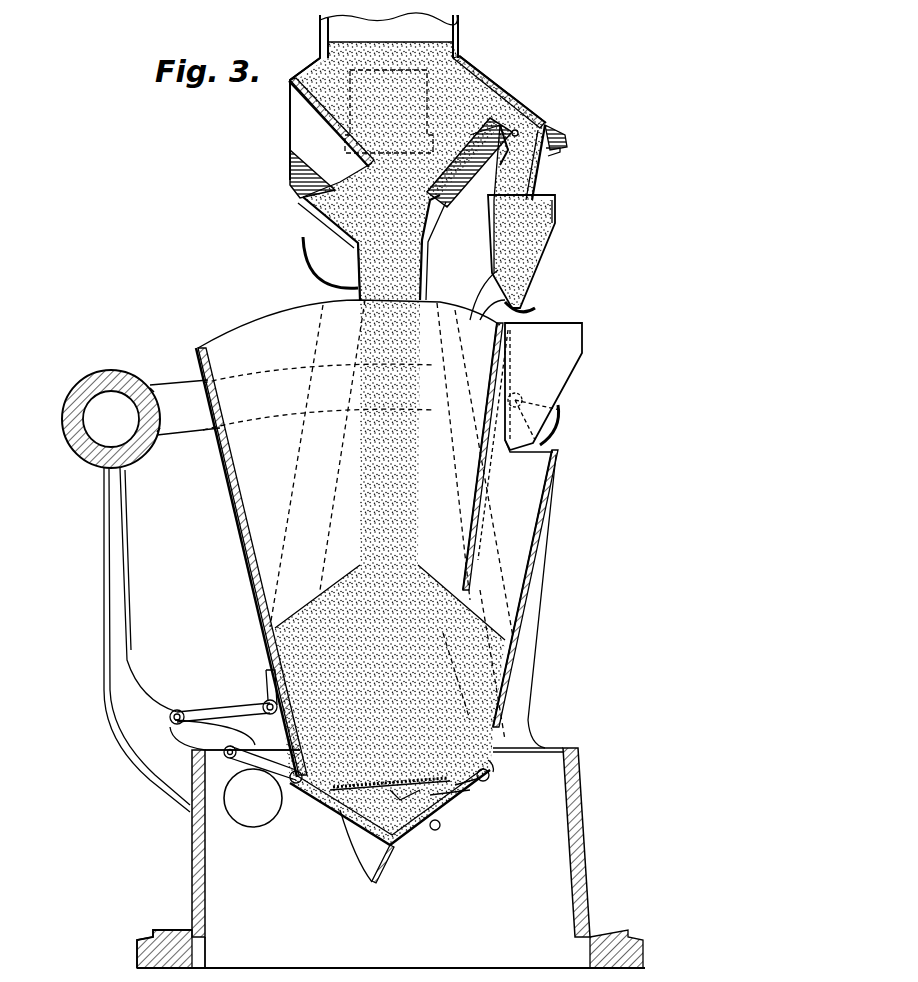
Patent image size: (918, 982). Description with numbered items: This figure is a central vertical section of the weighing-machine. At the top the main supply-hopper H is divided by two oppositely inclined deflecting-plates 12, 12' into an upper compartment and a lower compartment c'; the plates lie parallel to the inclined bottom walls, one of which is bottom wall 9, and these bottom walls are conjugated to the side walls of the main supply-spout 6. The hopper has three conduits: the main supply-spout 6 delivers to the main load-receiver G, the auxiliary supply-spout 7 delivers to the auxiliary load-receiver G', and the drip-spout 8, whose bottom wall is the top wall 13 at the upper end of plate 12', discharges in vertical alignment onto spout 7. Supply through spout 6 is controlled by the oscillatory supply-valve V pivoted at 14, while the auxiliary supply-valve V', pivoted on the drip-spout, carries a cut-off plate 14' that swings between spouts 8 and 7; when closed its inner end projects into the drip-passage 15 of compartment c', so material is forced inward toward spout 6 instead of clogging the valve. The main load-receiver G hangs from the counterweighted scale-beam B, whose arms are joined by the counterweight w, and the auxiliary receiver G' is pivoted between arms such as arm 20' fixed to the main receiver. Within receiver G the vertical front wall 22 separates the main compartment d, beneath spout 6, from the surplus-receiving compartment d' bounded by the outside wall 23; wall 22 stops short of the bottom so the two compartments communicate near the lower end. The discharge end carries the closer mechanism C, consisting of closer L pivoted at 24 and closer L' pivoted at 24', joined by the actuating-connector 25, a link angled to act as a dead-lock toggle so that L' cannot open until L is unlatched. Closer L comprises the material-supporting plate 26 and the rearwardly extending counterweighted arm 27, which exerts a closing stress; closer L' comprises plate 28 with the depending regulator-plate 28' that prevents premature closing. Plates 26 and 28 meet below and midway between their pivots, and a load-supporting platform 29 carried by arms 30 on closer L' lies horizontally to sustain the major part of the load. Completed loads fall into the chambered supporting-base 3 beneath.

The main supply-hopper H is at (312, 66).
The closer mechanism C is at (455, 88).
The deflecting-plate 12 is at (310, 122).
The deflecting-plate 12' is at (469, 171).
The top wall 13 is at (494, 122).
The drip-passage 15 is at (518, 130).
The drip-spout 8 is at (520, 146).
The auxiliary supply-valve V' is at (568, 137).
The pivot 14 is at (321, 170).
The cut-off plate 14' is at (580, 152).
The auxiliary supply-spout 7 is at (534, 188).
The lower compartment c' is at (313, 193).
The bottom wall 9 is at (330, 218).
The supply-valve V is at (313, 262).
The main supply-spout 6 is at (345, 288).
The auxiliary load-receiver G' is at (534, 251).
The arm 20' is at (478, 288).
The counterweight w is at (105, 372).
The scale-beam B is at (185, 401).
The main load-receiver G is at (374, 443).
The main compartment d is at (358, 510).
The surplus-receiving compartment d' is at (499, 610).
The front wall 22 is at (480, 456).
The outside wall 23 is at (545, 503).
The counterweighted arm 27 is at (225, 808).
The actuating-connector 25 is at (226, 748).
The pivot 24 is at (263, 801).
The pivot 24' is at (507, 773).
The supporting-base 3 is at (584, 830).
The closer L is at (377, 820).
The closer L' is at (453, 804).
The load-supporting platform 29 is at (360, 790).
The arms 30 is at (470, 795).
The material-supporting plate 28 is at (462, 838).
The regulator-plate 28' is at (404, 869).
The material-supporting plate 26 is at (372, 848).